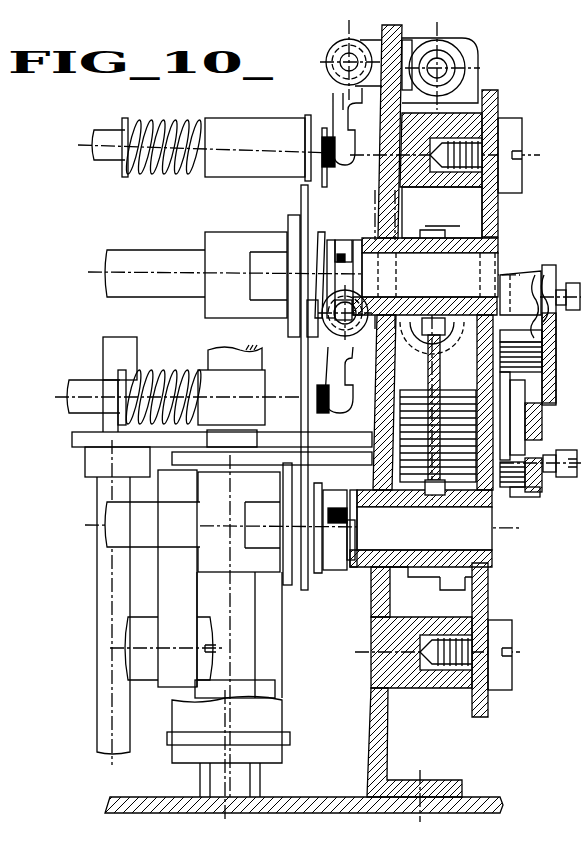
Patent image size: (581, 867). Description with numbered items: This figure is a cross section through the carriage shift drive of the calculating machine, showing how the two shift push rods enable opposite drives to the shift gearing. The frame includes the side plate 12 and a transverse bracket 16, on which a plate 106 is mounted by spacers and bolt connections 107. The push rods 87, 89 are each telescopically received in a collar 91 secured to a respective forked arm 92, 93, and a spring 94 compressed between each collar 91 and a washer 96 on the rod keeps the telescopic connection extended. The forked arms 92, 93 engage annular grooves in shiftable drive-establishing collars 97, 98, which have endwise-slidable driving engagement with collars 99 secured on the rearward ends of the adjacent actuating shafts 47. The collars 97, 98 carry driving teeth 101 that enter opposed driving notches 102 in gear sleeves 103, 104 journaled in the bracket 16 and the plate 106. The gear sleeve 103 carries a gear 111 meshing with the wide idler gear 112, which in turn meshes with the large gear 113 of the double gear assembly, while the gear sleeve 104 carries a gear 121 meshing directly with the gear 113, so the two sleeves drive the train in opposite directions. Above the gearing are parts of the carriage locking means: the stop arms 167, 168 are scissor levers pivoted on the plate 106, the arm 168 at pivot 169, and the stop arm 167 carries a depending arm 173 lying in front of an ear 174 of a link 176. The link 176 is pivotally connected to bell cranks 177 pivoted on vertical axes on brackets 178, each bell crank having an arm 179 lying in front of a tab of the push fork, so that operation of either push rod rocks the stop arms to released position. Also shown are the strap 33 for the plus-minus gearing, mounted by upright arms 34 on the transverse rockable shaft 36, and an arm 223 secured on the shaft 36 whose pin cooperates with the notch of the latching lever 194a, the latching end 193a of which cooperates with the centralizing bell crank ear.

The side plate 12 is at (318, 797).
The transverse bracket 16 is at (383, 752).
The strap 33 is at (283, 701).
The upright arms 34 is at (290, 735).
The transverse rockable shaft 36 is at (248, 648).
The actuating shaft 47 is at (143, 258).
The push rod 87 is at (88, 382).
The push rod 89 is at (105, 131).
The collar 91 is at (226, 124).
The forked arm 92 is at (305, 590).
The forked arm 93 is at (308, 124).
The spring 94 is at (149, 176).
The washer 96 is at (122, 172).
The drive-establishing collar 97 is at (285, 586).
The drive-establishing collar 98 is at (291, 224).
The collar 99 is at (215, 232).
The driving teeth 101 is at (330, 240).
The driving notches 102 is at (360, 238).
The gear sleeve 103 is at (414, 568).
The gear sleeve 104 is at (490, 238).
The plate 106 is at (486, 603).
The bolt connections 107 is at (488, 128).
The gear 111 is at (446, 588).
The wide idler gear 112 is at (398, 421).
The large gear 113 is at (438, 379).
The gear 121 is at (446, 226).
The stop arm 167 is at (551, 378).
The stop arm 168 is at (532, 497).
The pivot 169 is at (556, 478).
The depending arm 173 is at (510, 285).
The ear 174 is at (541, 275).
The link 176 is at (478, 62).
The bell crank 177 is at (455, 58).
The bracket 178 is at (333, 52).
The arm 179 is at (340, 163).
The latching end 193a is at (526, 420).
The latching lever 194a is at (528, 444).
The arm 223 is at (246, 447).